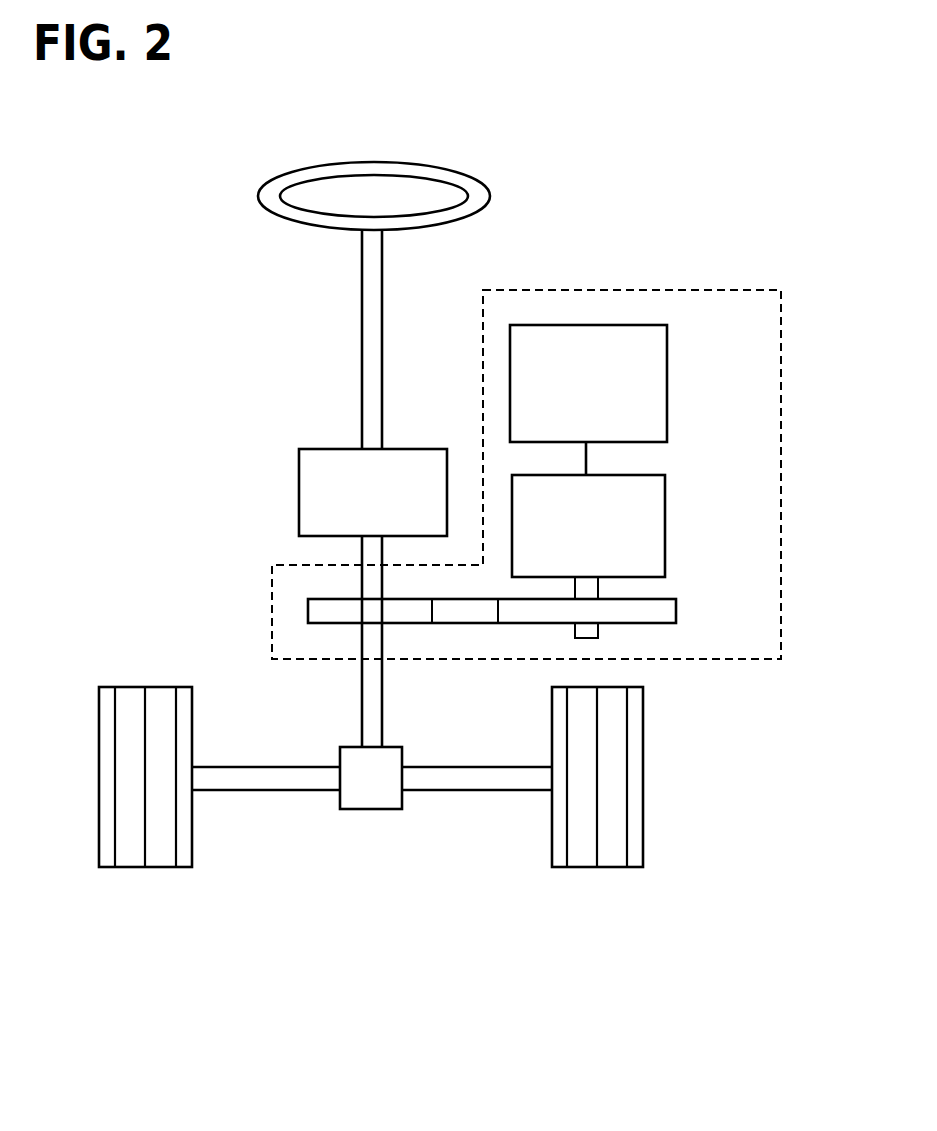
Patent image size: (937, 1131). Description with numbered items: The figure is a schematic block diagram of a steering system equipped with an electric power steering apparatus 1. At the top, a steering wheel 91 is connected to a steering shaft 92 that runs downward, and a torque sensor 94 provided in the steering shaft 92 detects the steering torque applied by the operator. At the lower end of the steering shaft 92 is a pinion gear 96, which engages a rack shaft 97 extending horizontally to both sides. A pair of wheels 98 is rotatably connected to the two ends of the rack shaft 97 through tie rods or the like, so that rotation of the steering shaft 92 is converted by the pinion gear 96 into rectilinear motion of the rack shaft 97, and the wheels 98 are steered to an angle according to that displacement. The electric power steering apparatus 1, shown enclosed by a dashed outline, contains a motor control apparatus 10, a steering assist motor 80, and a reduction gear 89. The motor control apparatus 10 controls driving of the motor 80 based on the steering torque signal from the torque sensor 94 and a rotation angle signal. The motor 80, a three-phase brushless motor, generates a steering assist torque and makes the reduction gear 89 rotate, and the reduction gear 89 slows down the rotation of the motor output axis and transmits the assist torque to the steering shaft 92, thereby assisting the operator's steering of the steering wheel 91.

The electric power steering apparatus 1 is at (757, 290).
The motor control apparatus 10 is at (585, 325).
The steering assist motor 80 is at (665, 520).
The reduction gear 89 is at (676, 605).
The steering wheel 91 is at (258, 199).
The steering shaft 92 is at (362, 293).
The torque sensor 94 is at (299, 483).
The pinion gear 96 is at (363, 810).
The rack shaft 97 is at (260, 791).
The wheels 98 is at (161, 868).